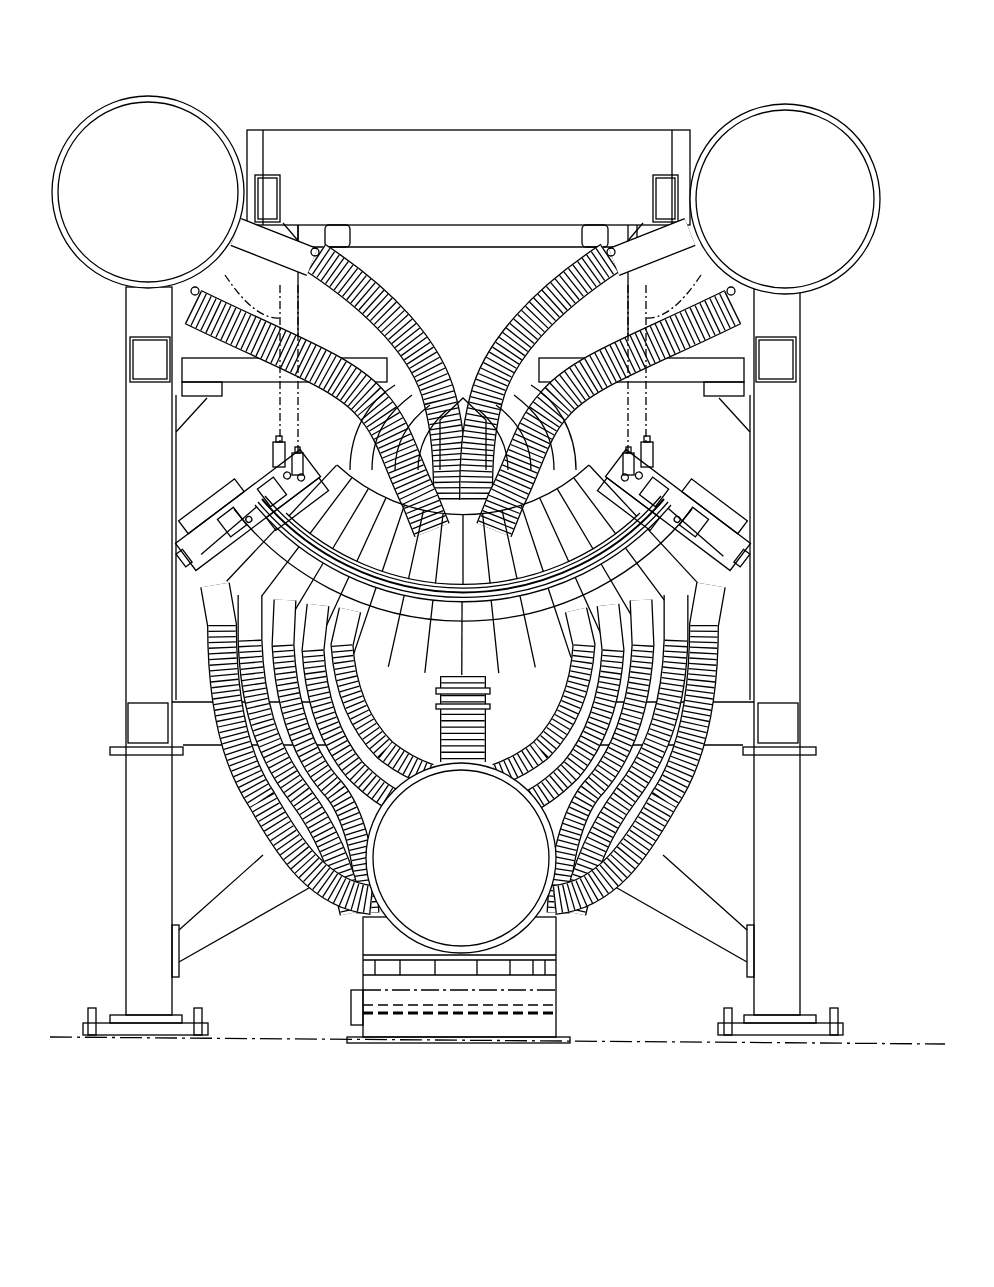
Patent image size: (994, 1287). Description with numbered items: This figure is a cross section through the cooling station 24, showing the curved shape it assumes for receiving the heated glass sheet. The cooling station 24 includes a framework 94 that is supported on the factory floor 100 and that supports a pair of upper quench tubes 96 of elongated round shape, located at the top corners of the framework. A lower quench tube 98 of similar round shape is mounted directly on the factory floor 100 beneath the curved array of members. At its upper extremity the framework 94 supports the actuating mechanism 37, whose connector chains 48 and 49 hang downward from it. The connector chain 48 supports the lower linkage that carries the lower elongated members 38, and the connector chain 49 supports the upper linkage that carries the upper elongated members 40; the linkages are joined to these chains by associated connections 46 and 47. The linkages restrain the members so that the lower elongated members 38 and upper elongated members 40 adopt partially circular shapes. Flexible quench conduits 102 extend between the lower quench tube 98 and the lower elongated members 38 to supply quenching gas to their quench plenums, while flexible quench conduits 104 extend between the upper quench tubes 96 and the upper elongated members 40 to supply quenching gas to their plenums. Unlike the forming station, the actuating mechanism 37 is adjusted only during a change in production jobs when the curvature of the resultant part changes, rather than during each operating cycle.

The cooling station 24 is at (716, 66).
The actuating mechanism 37 is at (516, 128).
The lower elongated members 38 is at (300, 625).
The upper elongated members 40 is at (362, 520).
The connection 46 is at (272, 442).
The connection 47 is at (292, 460).
The connector chain 48 is at (235, 280).
The connector chain 49 is at (265, 248).
The framework 94 is at (808, 536).
The upper quench tubes 96 is at (98, 288).
The lower quench tube 98 is at (545, 928).
The factory floor 100 is at (692, 1023).
The flexible quench conduits 102 is at (300, 815).
The flexible quench conduits 104 is at (457, 400).